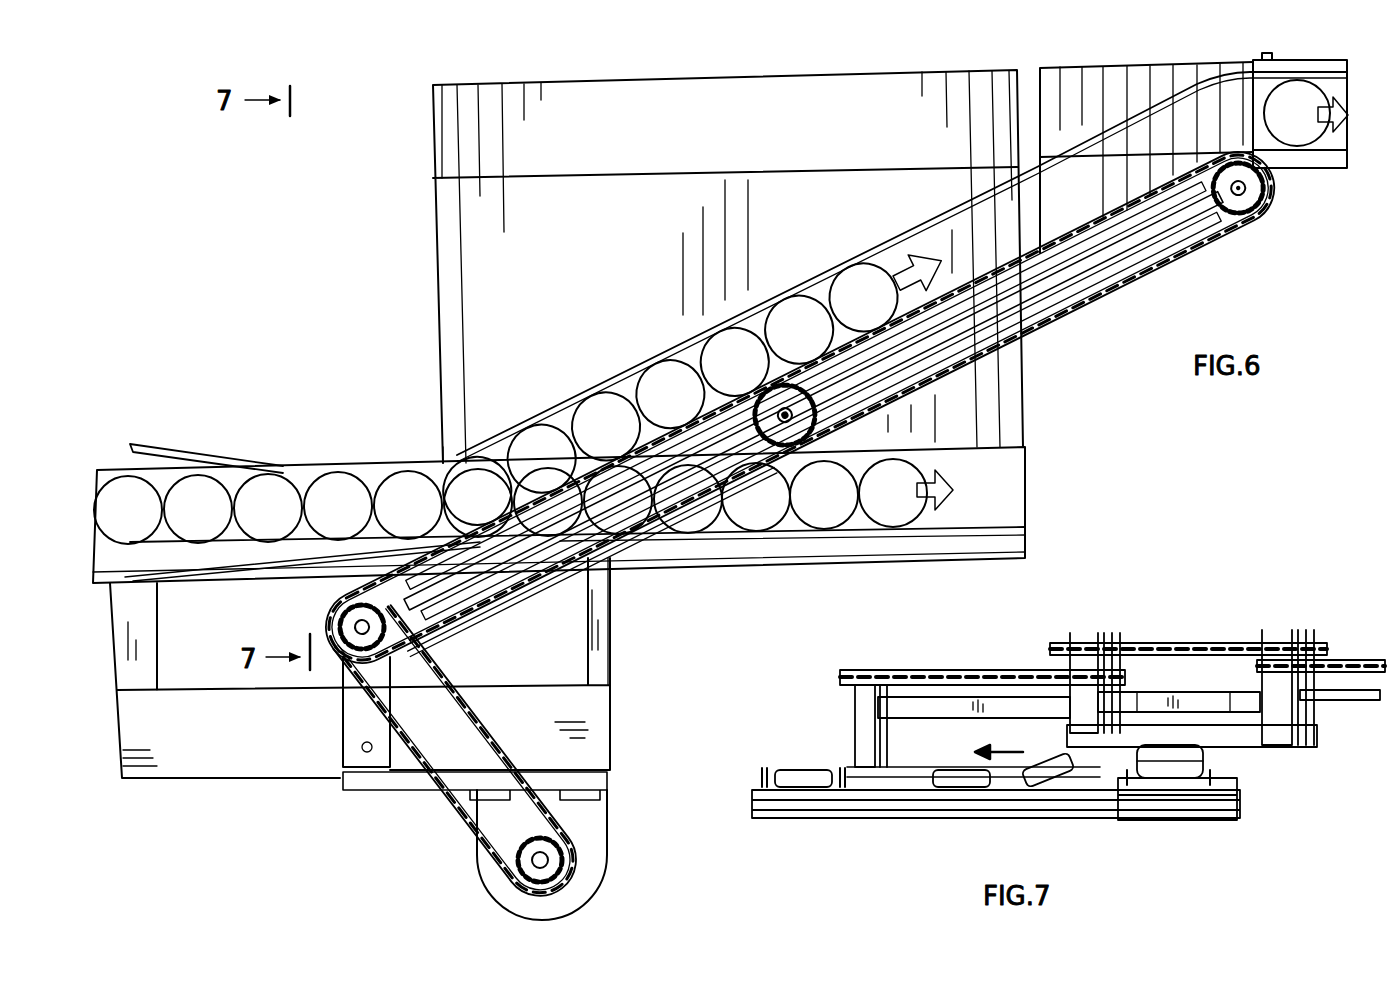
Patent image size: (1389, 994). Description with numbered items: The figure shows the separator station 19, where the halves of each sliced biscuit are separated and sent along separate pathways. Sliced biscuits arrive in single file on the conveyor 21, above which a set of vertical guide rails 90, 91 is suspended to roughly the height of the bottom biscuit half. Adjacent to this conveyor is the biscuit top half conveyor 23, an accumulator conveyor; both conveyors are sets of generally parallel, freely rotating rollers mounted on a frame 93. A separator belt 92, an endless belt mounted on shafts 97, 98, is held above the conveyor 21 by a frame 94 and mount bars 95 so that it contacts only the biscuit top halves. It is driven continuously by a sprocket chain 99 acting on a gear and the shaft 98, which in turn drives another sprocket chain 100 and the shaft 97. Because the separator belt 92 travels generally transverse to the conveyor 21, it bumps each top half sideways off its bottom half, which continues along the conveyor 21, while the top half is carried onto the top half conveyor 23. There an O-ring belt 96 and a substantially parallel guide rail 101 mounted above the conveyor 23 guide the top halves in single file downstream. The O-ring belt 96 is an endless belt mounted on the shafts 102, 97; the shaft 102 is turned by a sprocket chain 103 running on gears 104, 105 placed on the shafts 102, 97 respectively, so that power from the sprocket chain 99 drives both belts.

In FIG. 6, the separator station 19 is at (422, 311).
In FIG. 6, the conveyor 21 is at (307, 478).
In FIG. 7, the conveyor 21 is at (1200, 800).
In FIG. 6, the biscuit top half conveyor 23 is at (580, 258).
In FIG. 6, the vertical guide rail 90 is at (237, 437).
In FIG. 7, the vertical guide rail 90 is at (1116, 812).
In FIG. 6, the vertical guide rail 91 is at (300, 561).
In FIG. 7, the vertical guide rail 91 is at (1210, 772).
In FIG. 6, the separator belt 92 is at (441, 462).
In FIG. 7, the separator belt 92 is at (1258, 735).
In FIG. 6, the frame 93 is at (592, 855).
In FIG. 6, the frame 94 is at (350, 720).
In FIG. 7, the frame 94 is at (1345, 700).
In FIG. 6, the mount bars 95 is at (813, 401).
In FIG. 6, the O-ring belt 96 is at (813, 401).
In FIG. 7, the O-ring belt 96 is at (850, 768).
In FIG. 6, the shaft 97 is at (785, 415).
In FIG. 7, the shaft 97 is at (1090, 633).
In FIG. 6, the shaft 98 is at (361, 626).
In FIG. 7, the shaft 98 is at (1295, 630).
In FIG. 6, the sprocket chain 99 is at (462, 810).
In FIG. 7, the sprocket chain 99 is at (1360, 660).
In FIG. 6, the sprocket chain 100 is at (592, 561).
In FIG. 7, the sprocket chain 100 is at (1195, 643).
In FIG. 6, the guide rail 101 is at (519, 424).
In FIG. 6, the shaft 102 is at (1238, 187).
In FIG. 7, the shaft 102 is at (870, 685).
In FIG. 6, the sprocket chain 103 is at (800, 408).
In FIG. 7, the sprocket chain 103 is at (985, 670).
In FIG. 6, the gear 104 is at (1238, 188).
In FIG. 6, the gear 105 is at (785, 415).